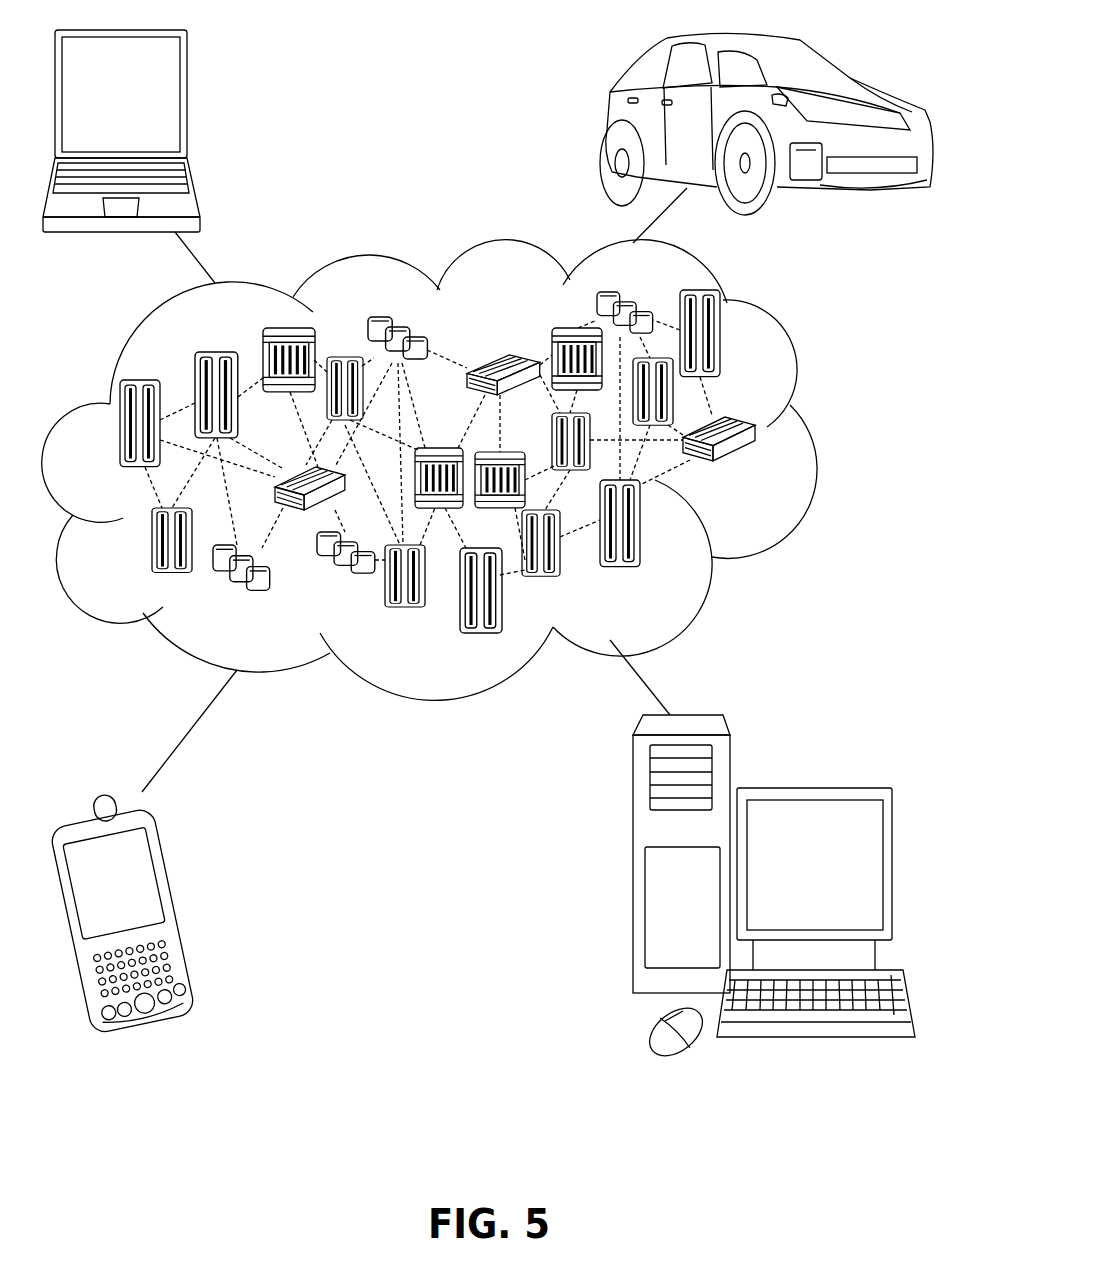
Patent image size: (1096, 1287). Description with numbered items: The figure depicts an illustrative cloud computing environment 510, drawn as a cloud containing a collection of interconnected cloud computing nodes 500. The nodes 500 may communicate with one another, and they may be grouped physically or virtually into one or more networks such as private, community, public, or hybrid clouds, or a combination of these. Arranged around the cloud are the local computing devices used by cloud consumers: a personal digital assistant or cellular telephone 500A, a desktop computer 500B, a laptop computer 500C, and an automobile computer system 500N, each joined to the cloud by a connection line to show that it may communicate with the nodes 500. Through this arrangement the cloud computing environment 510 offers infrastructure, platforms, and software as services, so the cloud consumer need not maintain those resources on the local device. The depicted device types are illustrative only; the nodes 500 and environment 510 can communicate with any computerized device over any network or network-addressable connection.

The cloud computing node 500 is at (760, 472).
The cloud computing environment 510 is at (813, 437).
The personal digital assistant (PDA) or cellular telephone 500A is at (178, 903).
The desktop computer 500B is at (812, 788).
The laptop computer 500C is at (188, 105).
The automobile computer system 500N is at (608, 128).